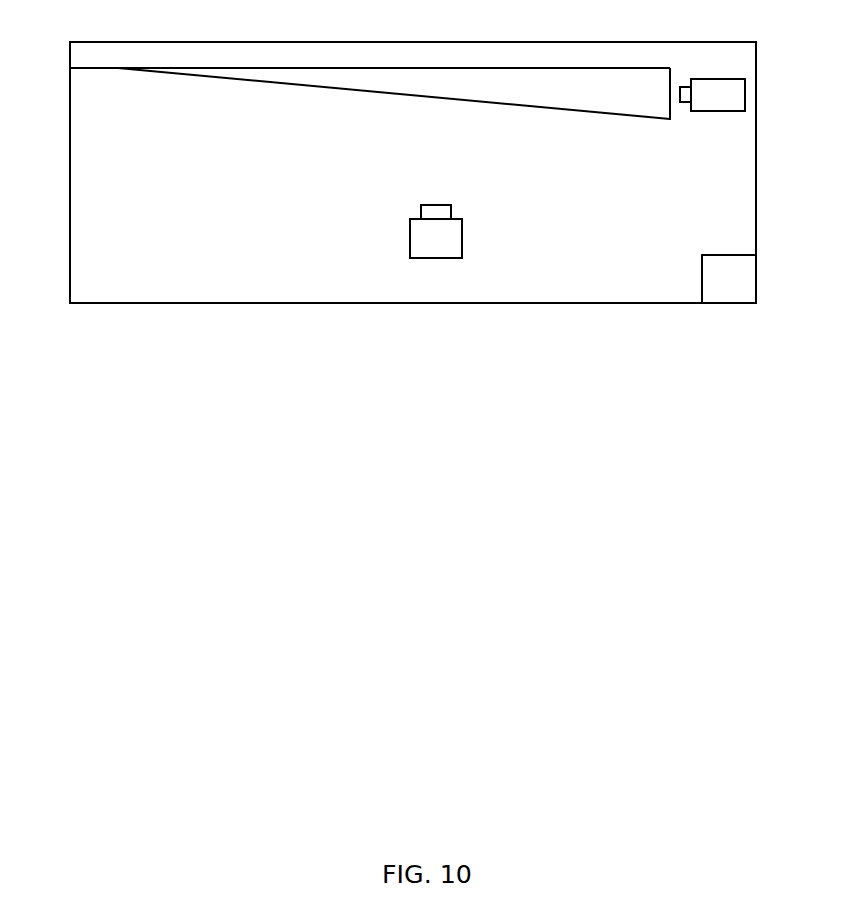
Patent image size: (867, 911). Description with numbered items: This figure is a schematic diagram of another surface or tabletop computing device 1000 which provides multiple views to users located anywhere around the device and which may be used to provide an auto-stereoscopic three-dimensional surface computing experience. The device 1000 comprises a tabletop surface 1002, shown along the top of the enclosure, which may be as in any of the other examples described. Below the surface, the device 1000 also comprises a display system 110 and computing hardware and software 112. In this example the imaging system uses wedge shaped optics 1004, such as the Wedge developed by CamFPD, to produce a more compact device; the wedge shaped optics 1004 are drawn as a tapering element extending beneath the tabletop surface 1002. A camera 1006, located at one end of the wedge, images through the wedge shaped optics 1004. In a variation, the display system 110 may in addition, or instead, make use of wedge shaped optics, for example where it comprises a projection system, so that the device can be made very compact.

The tabletop computing device 1000 is at (70, 192).
The tabletop surface 1002 is at (747, 55).
The wedge shaped optics 1004 is at (232, 73).
The camera 1006 is at (733, 112).
The display system 110 is at (463, 232).
The computing hardware and software 112 is at (702, 292).